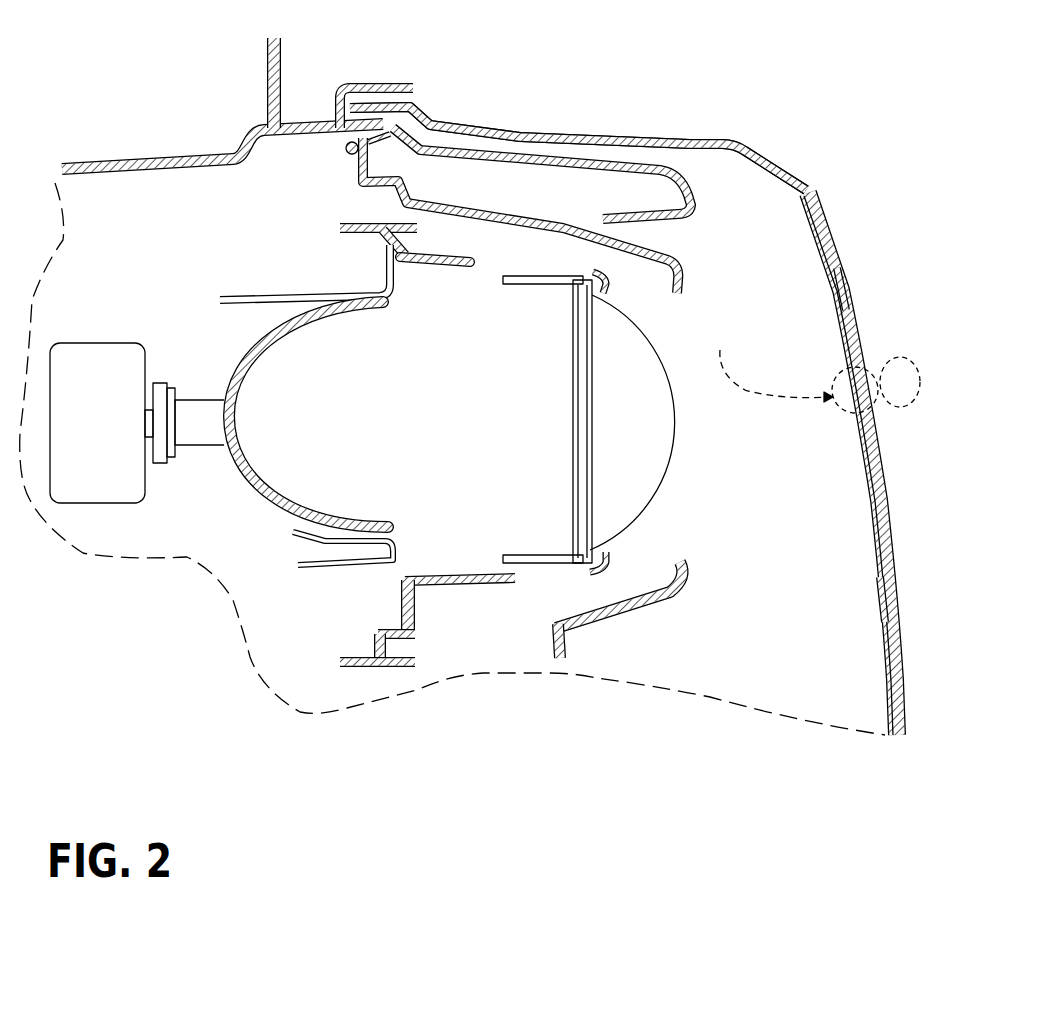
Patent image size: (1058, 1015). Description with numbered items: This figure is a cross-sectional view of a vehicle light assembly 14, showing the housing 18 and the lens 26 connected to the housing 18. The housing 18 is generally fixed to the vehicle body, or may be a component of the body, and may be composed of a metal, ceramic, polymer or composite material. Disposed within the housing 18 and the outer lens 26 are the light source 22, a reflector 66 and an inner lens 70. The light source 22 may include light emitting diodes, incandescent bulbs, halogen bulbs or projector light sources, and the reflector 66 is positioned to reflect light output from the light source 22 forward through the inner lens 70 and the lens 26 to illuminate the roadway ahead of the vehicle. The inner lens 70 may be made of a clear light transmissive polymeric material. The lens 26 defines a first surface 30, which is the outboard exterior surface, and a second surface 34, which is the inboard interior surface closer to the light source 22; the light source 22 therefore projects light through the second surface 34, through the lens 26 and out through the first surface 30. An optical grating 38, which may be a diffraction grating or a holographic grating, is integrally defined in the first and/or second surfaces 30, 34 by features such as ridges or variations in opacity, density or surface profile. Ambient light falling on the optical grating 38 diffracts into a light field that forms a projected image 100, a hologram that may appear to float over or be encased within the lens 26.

The light assembly 14 is at (735, 77).
The housing 18 is at (152, 157).
The light source 22 is at (200, 410).
The lens 26 is at (822, 195).
The first surface 30 is at (830, 230).
The second surface 34 is at (860, 433).
The optical grating 38 is at (846, 292).
The reflector 66 is at (243, 490).
The inner lens 70 is at (678, 460).
The projected image 100 is at (900, 357).